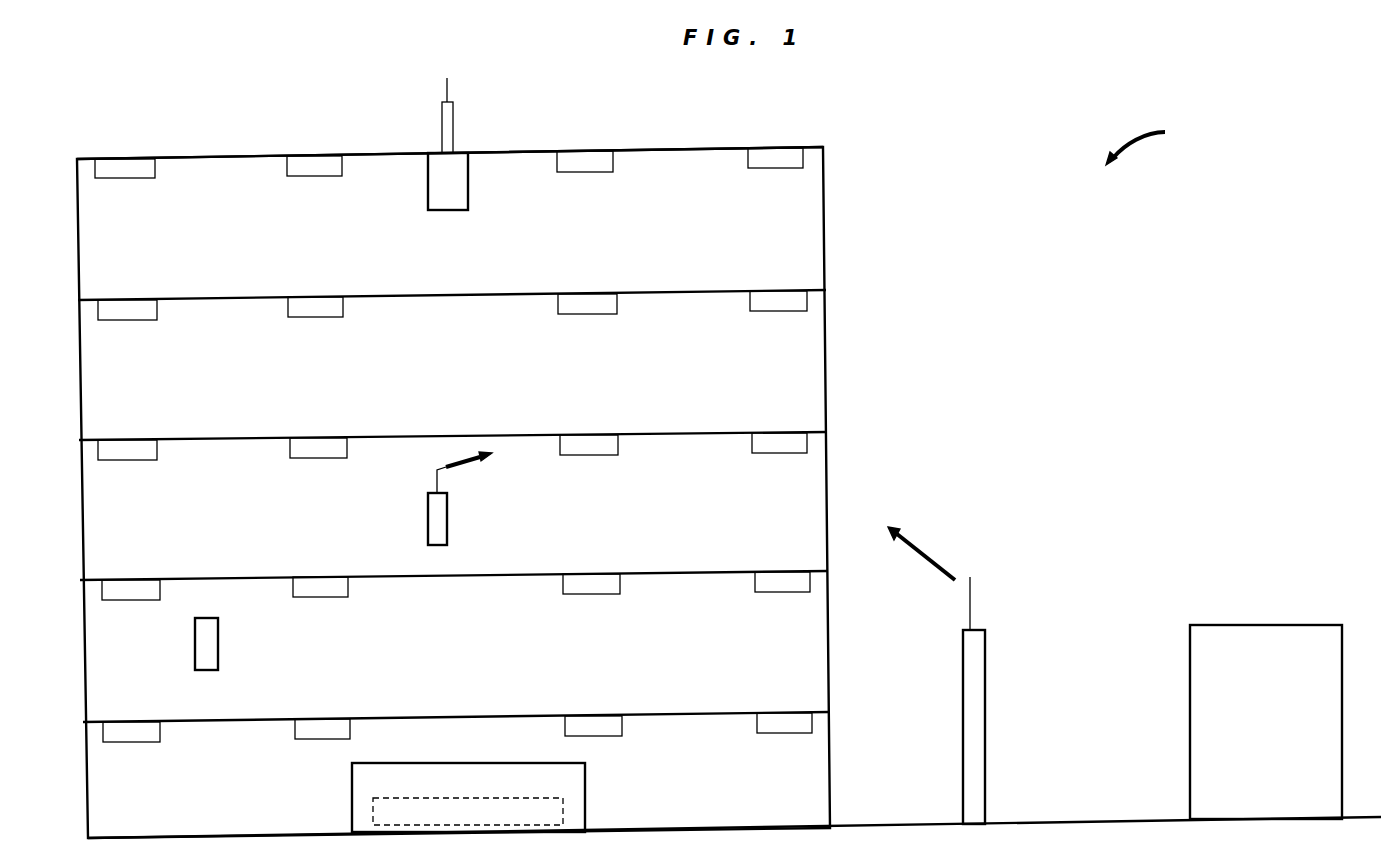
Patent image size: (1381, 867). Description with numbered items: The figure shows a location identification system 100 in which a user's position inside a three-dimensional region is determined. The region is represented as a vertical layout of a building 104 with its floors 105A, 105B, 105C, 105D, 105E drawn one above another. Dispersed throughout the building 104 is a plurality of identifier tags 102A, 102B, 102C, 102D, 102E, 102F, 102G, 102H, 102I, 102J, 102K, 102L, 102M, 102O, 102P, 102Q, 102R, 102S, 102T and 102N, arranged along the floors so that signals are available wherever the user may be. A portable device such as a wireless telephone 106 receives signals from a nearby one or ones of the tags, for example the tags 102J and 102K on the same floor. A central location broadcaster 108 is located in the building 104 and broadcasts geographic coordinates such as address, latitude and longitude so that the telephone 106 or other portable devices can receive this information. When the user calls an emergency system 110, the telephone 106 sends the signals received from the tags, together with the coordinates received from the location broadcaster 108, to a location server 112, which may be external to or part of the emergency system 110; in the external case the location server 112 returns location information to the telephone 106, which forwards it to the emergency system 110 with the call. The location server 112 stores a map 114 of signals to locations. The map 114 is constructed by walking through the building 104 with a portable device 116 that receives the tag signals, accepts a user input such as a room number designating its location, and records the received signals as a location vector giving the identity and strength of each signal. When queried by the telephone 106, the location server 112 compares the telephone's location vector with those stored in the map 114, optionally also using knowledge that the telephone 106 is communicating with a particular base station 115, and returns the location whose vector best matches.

The location identification system 100 is at (1154, 141).
The building 104 is at (660, 148).
The floor 105A is at (830, 778).
The floor 105B is at (830, 637).
The floor 105C is at (827, 498).
The floor 105D is at (827, 355).
The floor 105E is at (823, 217).
The identifier tag 102A is at (108, 178).
The identifier tag 102B is at (300, 176).
The identifier tag 102C is at (570, 172).
The identifier tag 102D is at (761, 168).
The identifier tag 102E is at (111, 320).
The identifier tag 102F is at (301, 317).
The identifier tag 102G is at (571, 314).
The identifier tag 102H is at (763, 311).
The identifier tag 102I is at (111, 460).
The identifier tag 102J is at (303, 458).
The identifier tag 102K is at (573, 455).
The identifier tag 102L is at (765, 453).
The identifier tag 102M is at (115, 600).
The identifier tag 102O is at (306, 597).
The identifier tag 102P is at (576, 594).
The identifier tag 102Q is at (768, 592).
The identifier tag 102R is at (116, 742).
The identifier tag 102S is at (295, 738).
The identifier tag 102T is at (622, 733).
The identifier tag 102N is at (767, 733).
The wireless telephone 106 is at (447, 522).
The central location broadcaster 108 is at (445, 210).
The emergency system 110 is at (1303, 625).
The location server 112 is at (352, 817).
The map 114 is at (563, 808).
The base station 115 is at (985, 660).
The portable device 116 is at (218, 647).